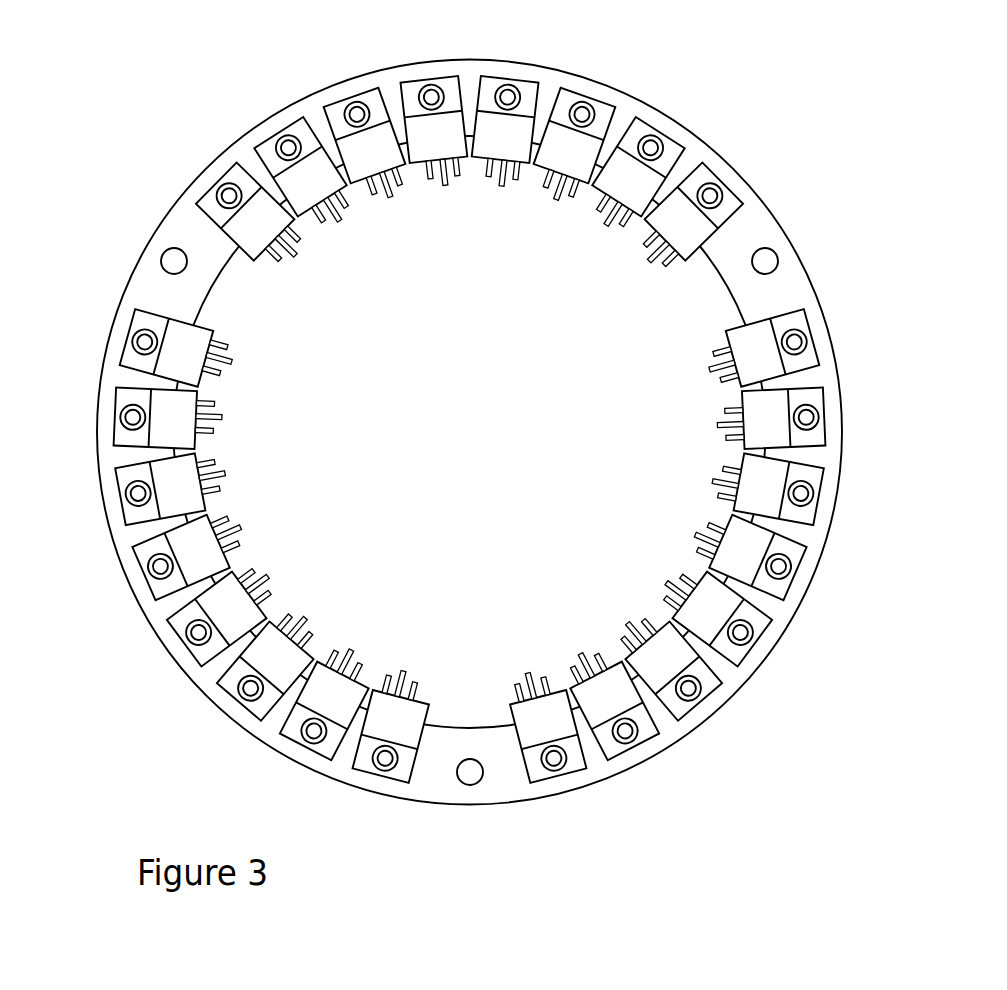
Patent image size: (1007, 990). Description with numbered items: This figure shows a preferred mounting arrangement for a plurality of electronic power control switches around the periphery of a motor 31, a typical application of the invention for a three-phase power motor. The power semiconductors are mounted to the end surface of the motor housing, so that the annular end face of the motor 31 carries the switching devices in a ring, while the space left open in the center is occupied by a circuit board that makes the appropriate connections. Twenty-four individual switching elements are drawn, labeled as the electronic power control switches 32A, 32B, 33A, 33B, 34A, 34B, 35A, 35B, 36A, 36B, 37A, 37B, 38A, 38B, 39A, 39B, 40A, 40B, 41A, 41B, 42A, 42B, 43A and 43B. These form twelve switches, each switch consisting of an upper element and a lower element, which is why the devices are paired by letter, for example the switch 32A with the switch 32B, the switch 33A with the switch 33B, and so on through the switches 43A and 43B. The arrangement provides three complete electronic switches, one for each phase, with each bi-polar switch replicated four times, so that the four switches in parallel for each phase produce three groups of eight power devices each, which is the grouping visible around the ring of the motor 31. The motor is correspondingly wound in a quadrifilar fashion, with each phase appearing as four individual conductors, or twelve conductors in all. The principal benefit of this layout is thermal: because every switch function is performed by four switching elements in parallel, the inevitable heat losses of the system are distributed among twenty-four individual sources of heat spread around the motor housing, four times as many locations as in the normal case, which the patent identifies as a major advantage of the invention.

The motor 31 is at (484, 432).
The electronic power control switch 32A is at (803, 313).
The electronic power control switch 32B is at (815, 383).
The electronic power control switch 33A is at (813, 487).
The electronic power control switch 33B is at (801, 552).
The electronic power control switch 34A is at (782, 611).
The electronic power control switch 34B is at (729, 661).
The electronic power control switch 35A is at (691, 700).
The electronic power control switch 35B is at (641, 725).
The electronic power control switch 36A is at (321, 730).
The electronic power control switch 36B is at (279, 700).
The electronic power control switch 37A is at (226, 661).
The electronic power control switch 37B is at (189, 611).
The electronic power control switch 38A is at (158, 554).
The electronic power control switch 38B is at (134, 489).
The electronic power control switch 39A is at (122, 403).
The electronic power control switch 39B is at (134, 320).
The electronic power control switch 40A is at (190, 220).
The electronic power control switch 40B is at (261, 167).
The electronic power control switch 41A is at (311, 131).
The electronic power control switch 41B is at (394, 104).
The electronic power control switch 42A is at (521, 106).
The electronic power control switch 42B is at (583, 124).
The electronic power control switch 43A is at (656, 152).
The electronic power control switch 43B is at (703, 195).